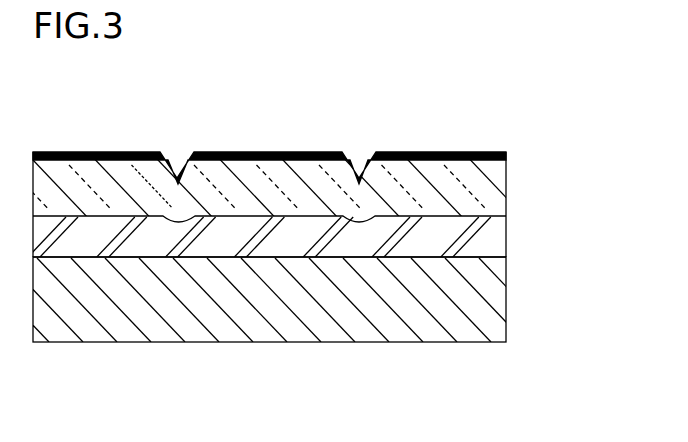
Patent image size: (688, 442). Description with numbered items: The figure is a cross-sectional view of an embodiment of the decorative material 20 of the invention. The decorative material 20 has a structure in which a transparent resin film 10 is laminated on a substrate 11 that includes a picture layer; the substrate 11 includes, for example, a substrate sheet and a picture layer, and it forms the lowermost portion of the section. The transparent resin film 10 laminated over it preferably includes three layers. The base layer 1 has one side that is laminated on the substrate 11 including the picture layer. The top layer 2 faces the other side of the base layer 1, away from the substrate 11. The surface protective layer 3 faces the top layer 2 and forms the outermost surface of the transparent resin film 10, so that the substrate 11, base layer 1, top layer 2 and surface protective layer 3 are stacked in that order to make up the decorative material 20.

The decorative material 20 is at (512, 82).
The transparent resin film 10 is at (559, 139).
The surface protective layer 3 is at (507, 156).
The top layer 2 is at (505, 181).
The base layer 1 is at (492, 240).
The substrate 11 is at (488, 303).